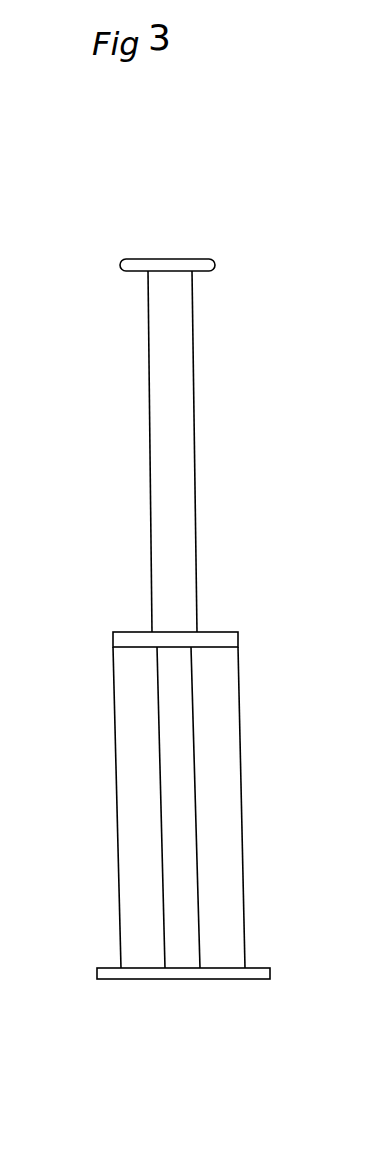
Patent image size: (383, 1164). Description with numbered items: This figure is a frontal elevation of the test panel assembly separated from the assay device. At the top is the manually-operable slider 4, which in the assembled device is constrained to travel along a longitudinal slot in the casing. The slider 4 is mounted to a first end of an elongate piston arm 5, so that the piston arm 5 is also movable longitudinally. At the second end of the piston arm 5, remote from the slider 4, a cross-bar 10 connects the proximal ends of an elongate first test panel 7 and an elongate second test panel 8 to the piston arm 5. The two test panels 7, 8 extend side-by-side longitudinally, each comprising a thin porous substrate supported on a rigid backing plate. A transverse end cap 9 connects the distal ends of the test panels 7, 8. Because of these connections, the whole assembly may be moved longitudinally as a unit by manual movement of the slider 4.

The slider 4 is at (128, 265).
The piston arm 5 is at (180, 553).
The cross-bar 10 is at (120, 636).
The first test panel 7 is at (130, 782).
The second test panel 8 is at (218, 779).
The transverse end cap 9 is at (218, 973).